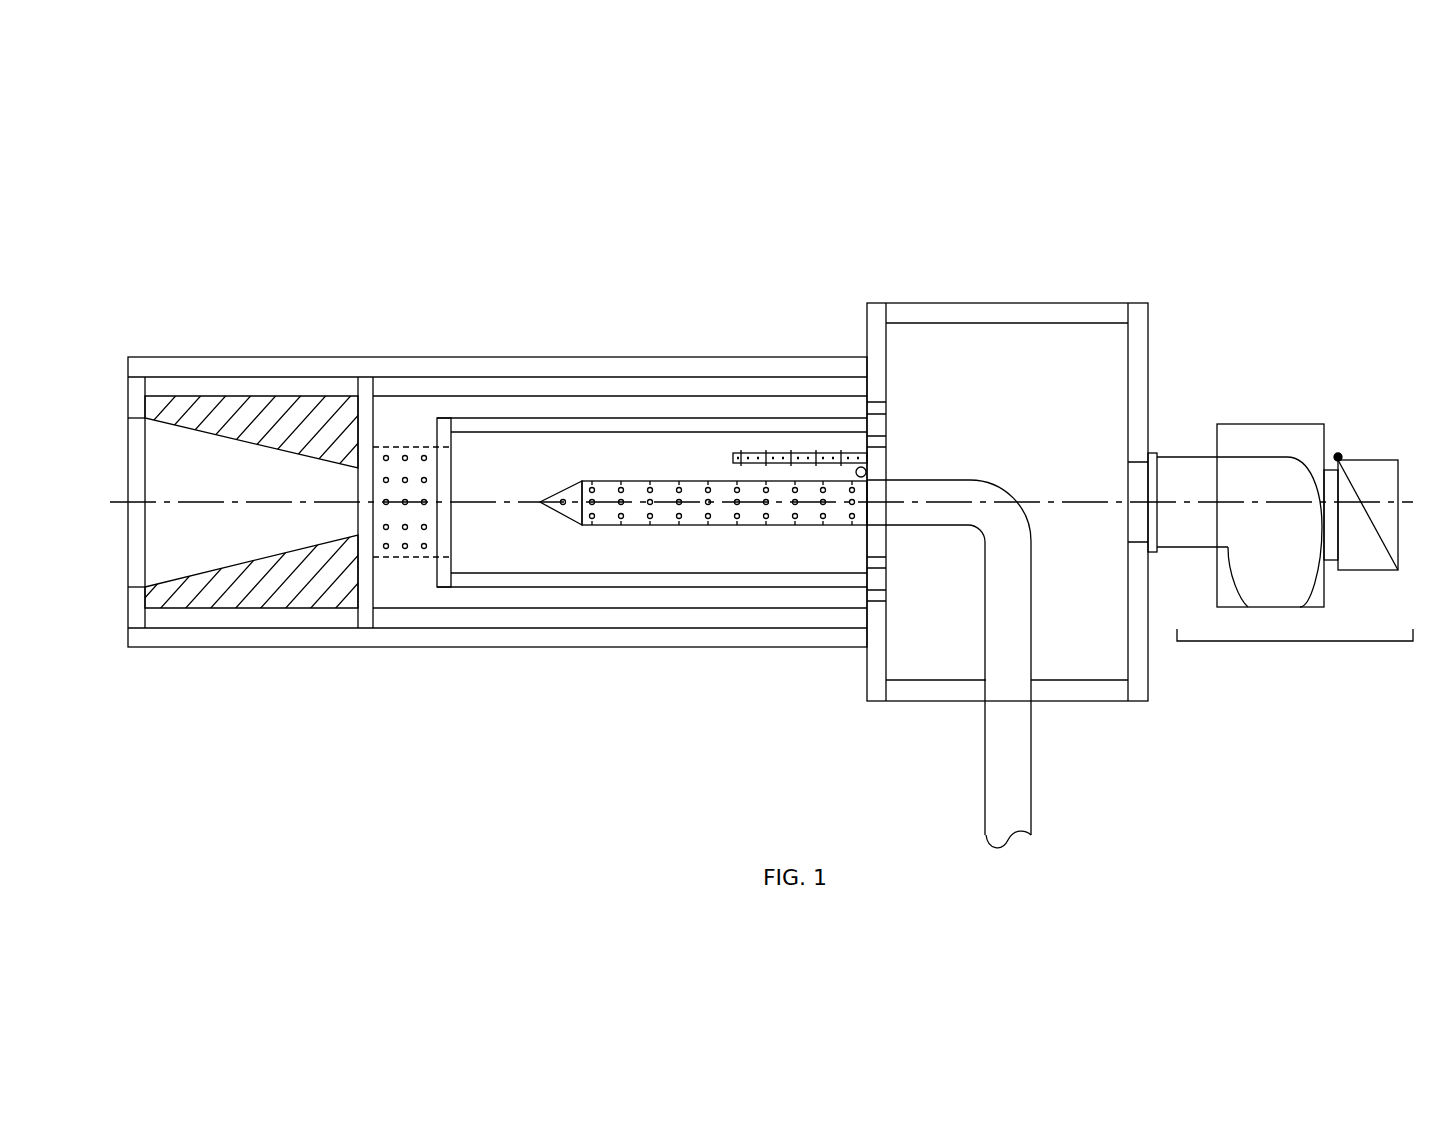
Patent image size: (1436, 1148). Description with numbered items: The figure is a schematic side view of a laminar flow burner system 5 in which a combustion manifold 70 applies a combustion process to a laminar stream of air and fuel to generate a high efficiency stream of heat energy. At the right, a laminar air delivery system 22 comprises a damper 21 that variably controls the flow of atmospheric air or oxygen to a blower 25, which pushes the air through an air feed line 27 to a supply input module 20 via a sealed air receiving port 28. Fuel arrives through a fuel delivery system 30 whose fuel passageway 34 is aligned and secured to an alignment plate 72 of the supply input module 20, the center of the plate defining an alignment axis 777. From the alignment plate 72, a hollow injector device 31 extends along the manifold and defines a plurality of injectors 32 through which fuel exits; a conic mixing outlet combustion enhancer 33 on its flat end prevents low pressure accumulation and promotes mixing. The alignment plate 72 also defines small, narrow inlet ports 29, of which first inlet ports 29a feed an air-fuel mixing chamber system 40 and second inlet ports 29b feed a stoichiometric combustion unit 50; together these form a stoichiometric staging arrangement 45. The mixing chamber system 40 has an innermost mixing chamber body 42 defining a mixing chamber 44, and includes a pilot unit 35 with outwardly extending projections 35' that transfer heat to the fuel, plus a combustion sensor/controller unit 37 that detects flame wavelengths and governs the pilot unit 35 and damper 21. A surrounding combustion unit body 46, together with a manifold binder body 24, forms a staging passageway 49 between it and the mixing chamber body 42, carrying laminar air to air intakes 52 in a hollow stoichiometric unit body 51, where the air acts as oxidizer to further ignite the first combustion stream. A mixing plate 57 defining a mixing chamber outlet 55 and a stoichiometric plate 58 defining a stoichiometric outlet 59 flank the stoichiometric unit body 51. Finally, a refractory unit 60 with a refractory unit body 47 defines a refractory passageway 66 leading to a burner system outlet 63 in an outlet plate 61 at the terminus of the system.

The laminar flow burner system 5 is at (1290, 176).
The supply input module 20 is at (867, 240).
The damper 21 is at (1368, 470).
The laminar air delivery system 22 is at (1295, 642).
The manifold binder body 24 is at (503, 372).
The blower 25 is at (1268, 435).
The air feed line 27 is at (1192, 468).
The air receiving port 28 is at (1137, 473).
The inlet ports 29 is at (903, 402).
The first inlet ports 29a is at (880, 445).
The second inlet ports 29b is at (880, 405).
The fuel delivery system 30 is at (1036, 760).
The injector device 31 is at (608, 480).
The injectors 32 is at (603, 527).
The mixing outlet combustion enhancer 33 is at (573, 507).
The fuel passageway 34 is at (1023, 600).
The pilot unit 35 is at (756, 453).
The outwardly extending projections 35' is at (755, 385).
The combustion sensor/controller unit 37 is at (855, 472).
The air-fuel mixing chamber system 40 is at (867, 690).
The mixing chamber body 42 is at (620, 423).
The mixing chamber 44 is at (745, 558).
The stoichiometric staging arrangement 45 is at (862, 306).
The combustion unit body 46 is at (690, 385).
The refractory unit body 47 is at (245, 377).
The staging passageway 49 is at (406, 407).
The stoichiometric combustion unit 50 is at (450, 690).
The stoichiometric unit body 51 is at (397, 457).
The air intakes 52 is at (424, 547).
The mixing chamber outlet 55 is at (443, 481).
The mixing plate 57 is at (442, 428).
The stoichiometric plate 58 is at (358, 412).
The stoichiometric outlet 59 is at (358, 482).
The refractory unit 60 is at (357, 690).
The outlet plate 61 is at (135, 387).
The burner system outlet 63 is at (138, 478).
The refractory passageway 66 is at (195, 548).
The combustion manifold 70 is at (867, 237).
The alignment plate 72 is at (880, 352).
The alignment axis 777 is at (1093, 503).